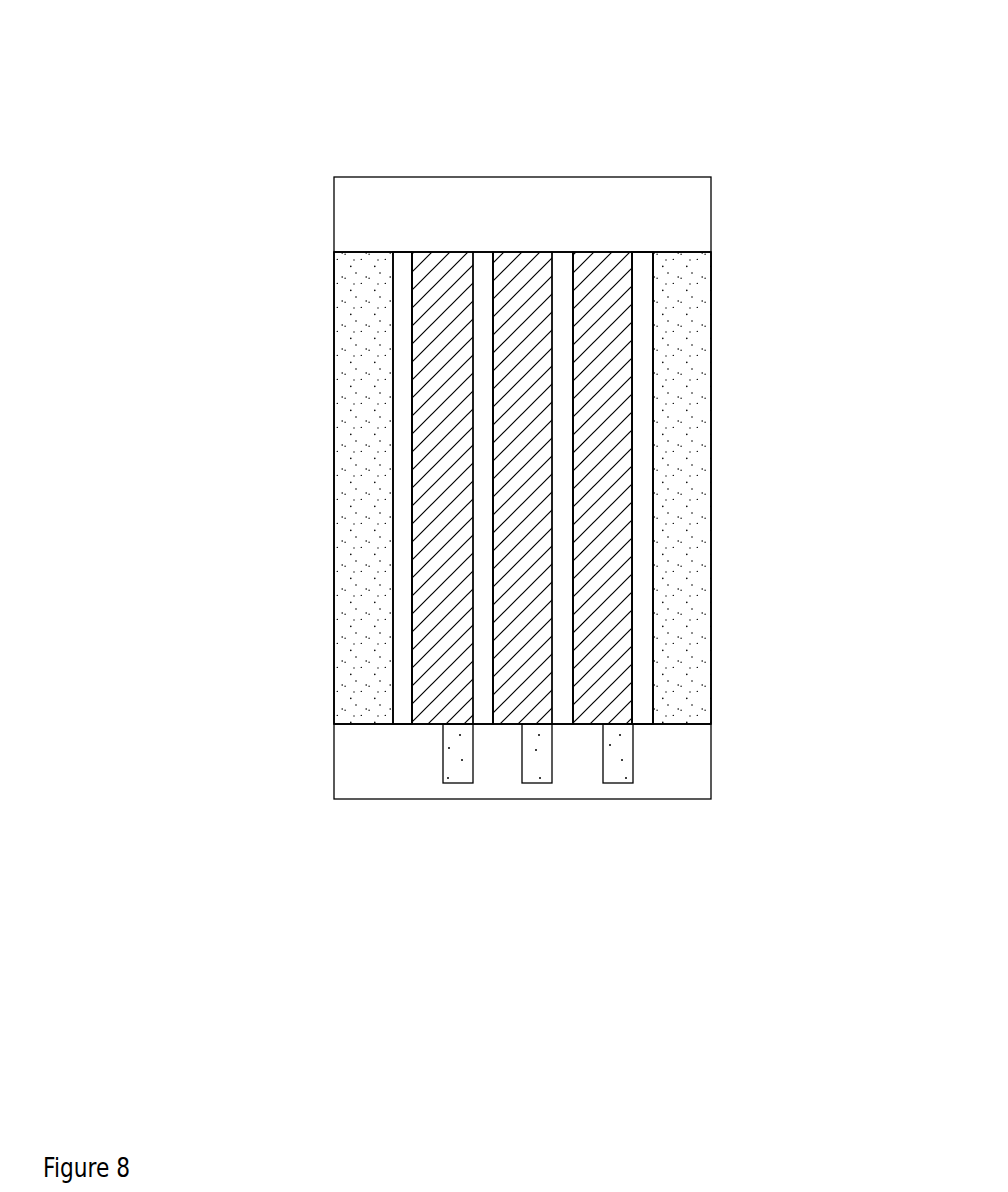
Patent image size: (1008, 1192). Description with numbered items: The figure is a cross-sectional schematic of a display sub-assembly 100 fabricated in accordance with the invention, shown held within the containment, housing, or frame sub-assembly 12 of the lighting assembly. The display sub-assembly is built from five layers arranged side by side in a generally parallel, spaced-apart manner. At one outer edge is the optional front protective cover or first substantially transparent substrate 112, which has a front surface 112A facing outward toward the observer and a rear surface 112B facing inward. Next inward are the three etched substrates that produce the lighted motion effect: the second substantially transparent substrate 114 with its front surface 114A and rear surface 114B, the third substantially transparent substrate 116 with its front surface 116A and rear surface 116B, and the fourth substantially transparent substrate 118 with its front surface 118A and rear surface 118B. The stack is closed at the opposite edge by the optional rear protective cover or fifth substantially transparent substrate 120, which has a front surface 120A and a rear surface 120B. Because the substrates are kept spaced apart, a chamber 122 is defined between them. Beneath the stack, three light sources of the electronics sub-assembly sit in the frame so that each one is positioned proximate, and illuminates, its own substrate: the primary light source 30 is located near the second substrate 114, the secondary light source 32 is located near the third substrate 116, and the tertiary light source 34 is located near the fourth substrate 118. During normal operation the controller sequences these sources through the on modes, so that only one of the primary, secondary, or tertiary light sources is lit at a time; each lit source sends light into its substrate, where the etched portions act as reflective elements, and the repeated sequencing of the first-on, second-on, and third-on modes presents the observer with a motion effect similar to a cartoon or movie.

The optical device 100 is at (683, 123).
The containment, housing, and/or frame sub-assembly 12 is at (522, 215).
The fifth substantially transparent substrate 120 is at (364, 735).
The front surface 120A is at (393, 337).
The rear surface 120B is at (334, 278).
The chamber 122 is at (402, 660).
The fourth substantially transparent substrate 118 is at (426, 735).
The front surface 118A is at (470, 462).
The rear surface 118B is at (412, 402).
The third substantially transparent substrate 116 is at (506, 735).
The front surface 116A is at (552, 580).
The rear surface 116B is at (493, 521).
The second substantially transparent substrate 114 is at (588, 735).
The front surface 114A is at (632, 461).
The rear surface 114B is at (573, 401).
The first substantially transparent substrate 112 is at (682, 735).
The front surface 112A is at (711, 341).
The rear surface 112B is at (653, 281).
The tertiary light source 34 is at (457, 783).
The secondary light source 32 is at (538, 783).
The primary light source 30 is at (618, 783).